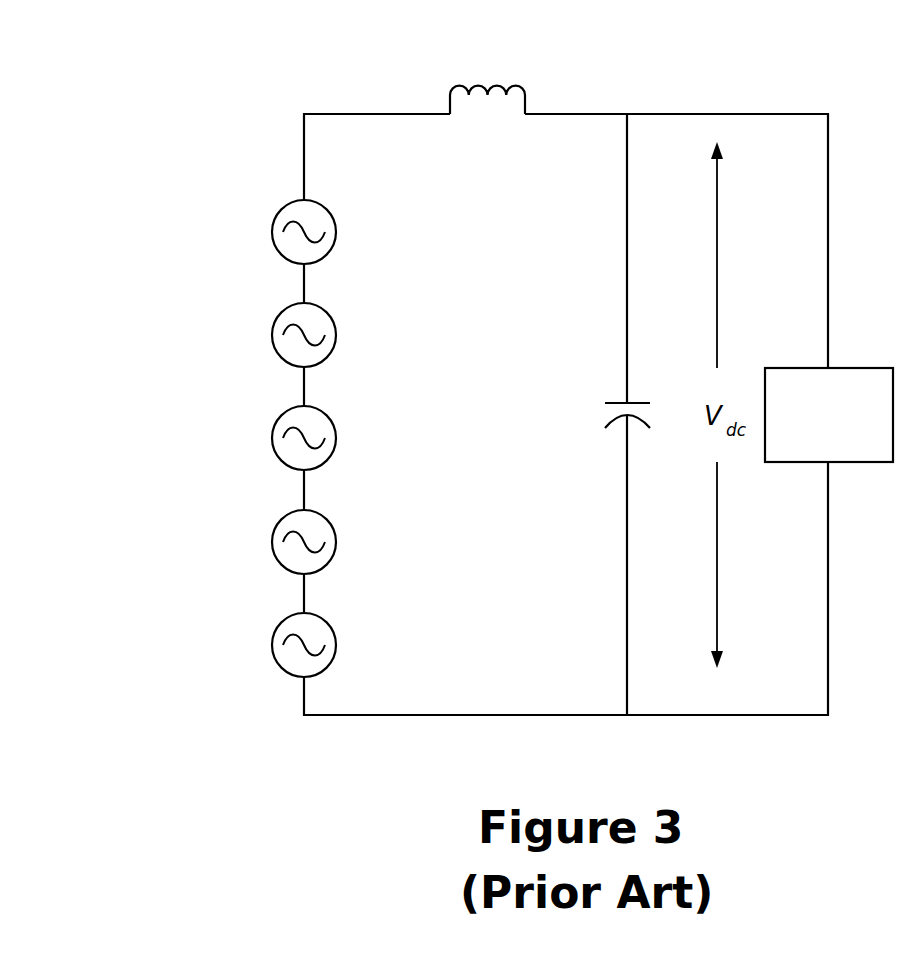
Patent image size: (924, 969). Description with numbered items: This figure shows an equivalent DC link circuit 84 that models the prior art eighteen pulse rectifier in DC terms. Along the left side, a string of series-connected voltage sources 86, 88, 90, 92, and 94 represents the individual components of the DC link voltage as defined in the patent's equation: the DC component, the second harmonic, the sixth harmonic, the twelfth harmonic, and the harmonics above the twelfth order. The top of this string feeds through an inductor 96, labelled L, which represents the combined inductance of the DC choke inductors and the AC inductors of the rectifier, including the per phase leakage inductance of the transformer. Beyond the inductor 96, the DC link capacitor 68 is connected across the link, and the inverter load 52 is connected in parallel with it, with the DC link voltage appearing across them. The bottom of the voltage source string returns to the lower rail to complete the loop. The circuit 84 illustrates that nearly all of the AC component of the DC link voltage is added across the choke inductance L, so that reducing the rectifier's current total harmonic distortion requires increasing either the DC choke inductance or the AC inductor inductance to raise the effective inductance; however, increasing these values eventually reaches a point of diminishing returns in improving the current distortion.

The equivalent DC link circuit 84 is at (113, 100).
The inductor 96 is at (478, 85).
The voltage source 94 is at (337, 225).
The voltage source 92 is at (337, 340).
The voltage source 90 is at (337, 433).
The voltage source 88 is at (337, 544).
The voltage source 86 is at (337, 647).
The DC link capacitor 68 is at (606, 400).
The inverter load 52 is at (845, 447).